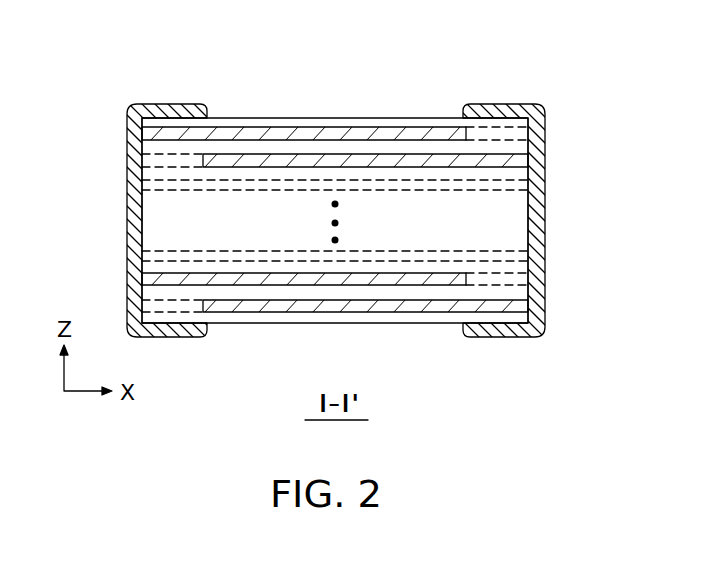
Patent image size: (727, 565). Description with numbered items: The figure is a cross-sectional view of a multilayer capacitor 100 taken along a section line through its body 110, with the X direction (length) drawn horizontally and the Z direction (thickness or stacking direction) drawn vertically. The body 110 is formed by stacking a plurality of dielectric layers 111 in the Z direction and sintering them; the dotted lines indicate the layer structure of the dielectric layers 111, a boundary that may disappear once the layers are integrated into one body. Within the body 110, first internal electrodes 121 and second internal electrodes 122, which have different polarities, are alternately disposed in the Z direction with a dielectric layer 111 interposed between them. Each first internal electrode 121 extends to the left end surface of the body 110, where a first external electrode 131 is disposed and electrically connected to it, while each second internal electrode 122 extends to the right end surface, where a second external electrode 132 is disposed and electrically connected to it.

The multilayer capacitor 100 is at (363, 174).
The body 110 is at (258, 118).
The dielectric layer 111 is at (455, 291).
The first internal electrode 121 is at (186, 139).
The second internal electrode 122 is at (515, 307).
The first external electrode 131 is at (170, 104).
The second external electrode 132 is at (505, 104).